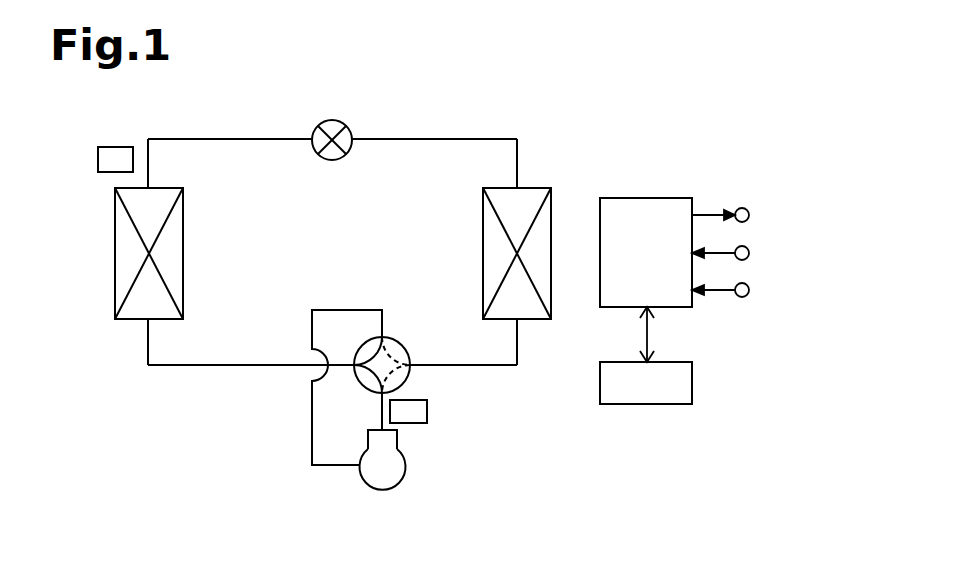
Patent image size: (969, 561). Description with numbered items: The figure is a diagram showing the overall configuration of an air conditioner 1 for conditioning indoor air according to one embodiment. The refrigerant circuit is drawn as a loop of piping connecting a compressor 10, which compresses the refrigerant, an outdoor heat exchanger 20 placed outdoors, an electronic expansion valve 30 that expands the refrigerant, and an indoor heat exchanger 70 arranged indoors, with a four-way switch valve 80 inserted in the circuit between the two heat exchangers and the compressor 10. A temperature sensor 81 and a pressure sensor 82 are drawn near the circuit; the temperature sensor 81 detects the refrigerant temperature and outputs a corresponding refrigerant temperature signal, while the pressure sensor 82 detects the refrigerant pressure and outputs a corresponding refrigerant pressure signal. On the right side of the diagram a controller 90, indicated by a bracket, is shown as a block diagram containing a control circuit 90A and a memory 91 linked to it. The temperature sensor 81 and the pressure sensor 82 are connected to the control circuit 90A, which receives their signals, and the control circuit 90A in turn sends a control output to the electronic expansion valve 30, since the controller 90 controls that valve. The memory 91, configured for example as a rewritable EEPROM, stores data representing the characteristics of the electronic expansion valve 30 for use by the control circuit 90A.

The air conditioner 1 is at (614, 90).
The compressor 10 is at (405, 467).
The outdoor heat exchanger 20 is at (483, 277).
The electronic expansion valve 30 is at (332, 120).
The indoor heat exchanger 70 is at (114, 252).
The four-way switch valve 80 is at (402, 347).
The temperature sensor 81 is at (98, 158).
The pressure sensor 82 is at (428, 411).
The controller 90 is at (815, 198).
The control circuit 90A is at (649, 198).
The memory 91 is at (645, 405).